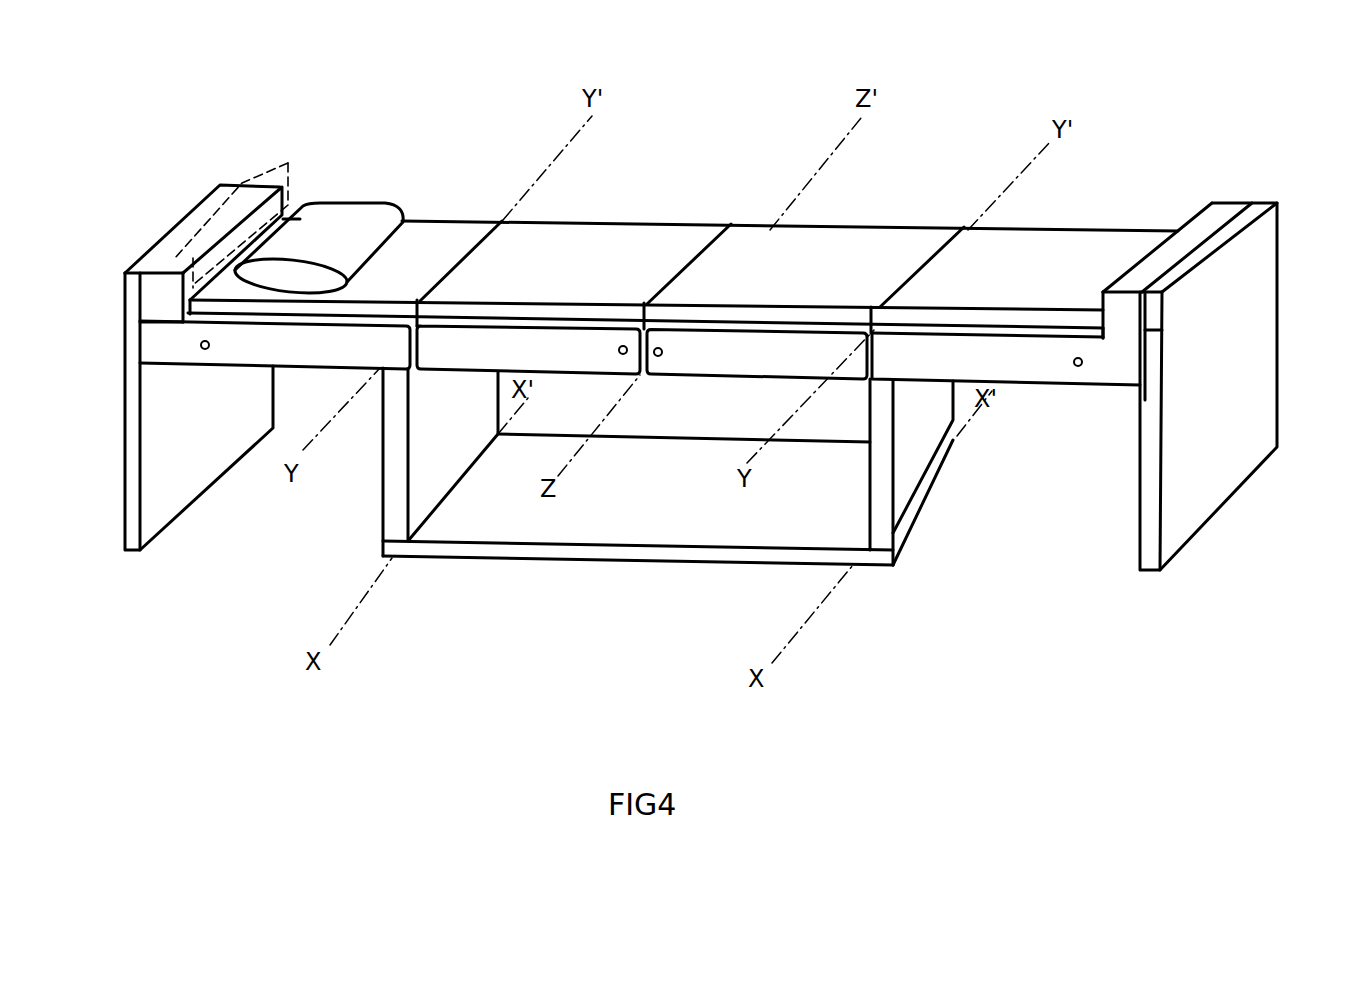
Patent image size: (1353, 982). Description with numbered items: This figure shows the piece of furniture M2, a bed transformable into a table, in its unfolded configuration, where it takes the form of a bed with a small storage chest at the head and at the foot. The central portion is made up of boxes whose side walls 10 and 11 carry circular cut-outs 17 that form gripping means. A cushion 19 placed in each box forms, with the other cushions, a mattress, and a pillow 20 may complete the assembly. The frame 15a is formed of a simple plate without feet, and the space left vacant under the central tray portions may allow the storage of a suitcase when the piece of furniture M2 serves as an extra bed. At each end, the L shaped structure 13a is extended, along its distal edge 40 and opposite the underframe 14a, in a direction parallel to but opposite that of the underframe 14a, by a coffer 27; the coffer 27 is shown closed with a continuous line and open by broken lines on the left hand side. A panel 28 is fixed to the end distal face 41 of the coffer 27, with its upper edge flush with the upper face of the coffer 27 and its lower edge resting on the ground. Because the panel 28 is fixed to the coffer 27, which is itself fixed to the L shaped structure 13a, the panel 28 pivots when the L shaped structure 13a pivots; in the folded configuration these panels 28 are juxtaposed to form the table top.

The coffer 27 is at (262, 174).
The pillow 20 is at (370, 223).
The cushion 19 is at (523, 237).
The L shaped structure 13a is at (640, 353).
The front side wall 10 is at (528, 350).
The rear side wall 11 is at (757, 355).
The circular cut-out 17 is at (200, 346).
The distal edge 40 is at (177, 322).
The end distal face 41 is at (1162, 330).
The panel 28 is at (1237, 393).
The underframe 14a is at (428, 474).
The frame 15a is at (637, 553).
The piece of furniture M2 is at (1084, 164).